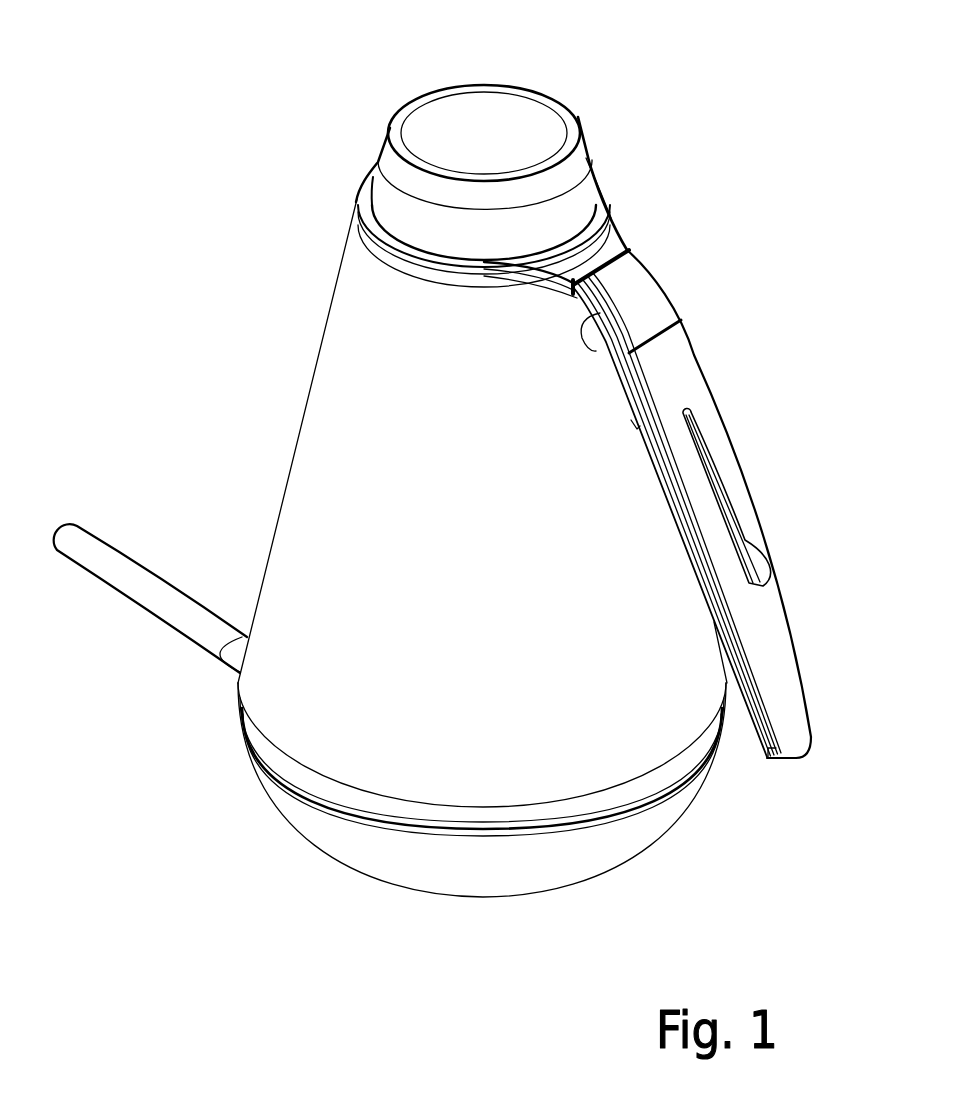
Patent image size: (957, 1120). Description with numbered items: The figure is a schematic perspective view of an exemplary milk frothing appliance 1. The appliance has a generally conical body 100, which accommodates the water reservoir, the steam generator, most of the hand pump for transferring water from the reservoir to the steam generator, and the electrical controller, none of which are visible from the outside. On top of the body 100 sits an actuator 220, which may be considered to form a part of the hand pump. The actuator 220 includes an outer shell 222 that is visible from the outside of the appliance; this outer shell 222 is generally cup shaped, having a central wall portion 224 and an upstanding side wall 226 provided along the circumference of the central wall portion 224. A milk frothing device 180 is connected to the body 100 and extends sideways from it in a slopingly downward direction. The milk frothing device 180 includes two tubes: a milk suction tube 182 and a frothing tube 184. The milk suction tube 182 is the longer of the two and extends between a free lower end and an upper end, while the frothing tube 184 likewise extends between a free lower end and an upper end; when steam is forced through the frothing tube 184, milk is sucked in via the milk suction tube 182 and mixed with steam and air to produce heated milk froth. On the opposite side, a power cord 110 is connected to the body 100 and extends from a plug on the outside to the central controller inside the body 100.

The milk frothing appliance 1 is at (283, 128).
The body 100 is at (350, 445).
The power cord 110 is at (142, 597).
The milk frothing device 180 is at (717, 351).
The milk suction tube 182 is at (758, 647).
The frothing tube 184 is at (717, 445).
The actuator 220 is at (540, 75).
The outer shell 222 is at (567, 154).
The central wall portion 224 is at (508, 122).
The upstanding side wall 226 is at (566, 189).